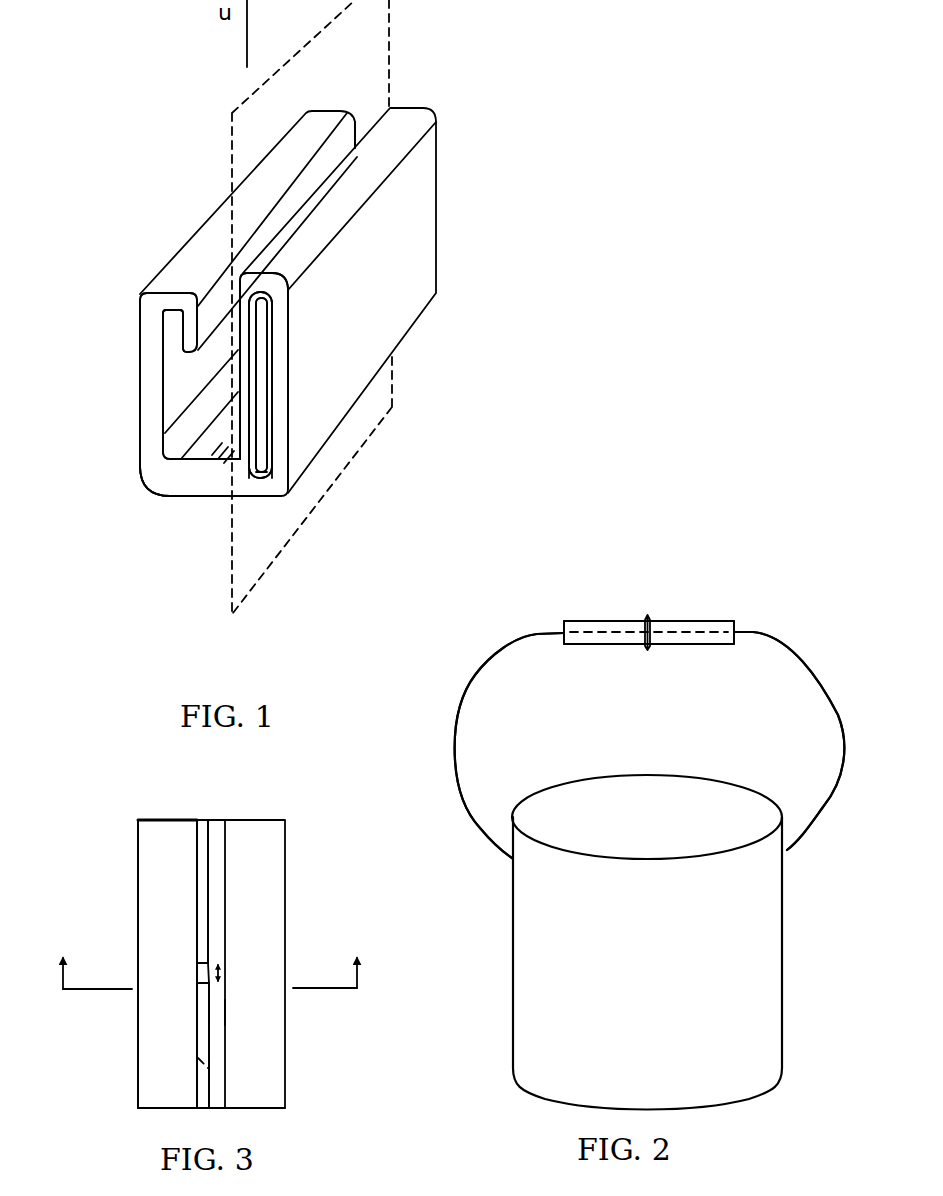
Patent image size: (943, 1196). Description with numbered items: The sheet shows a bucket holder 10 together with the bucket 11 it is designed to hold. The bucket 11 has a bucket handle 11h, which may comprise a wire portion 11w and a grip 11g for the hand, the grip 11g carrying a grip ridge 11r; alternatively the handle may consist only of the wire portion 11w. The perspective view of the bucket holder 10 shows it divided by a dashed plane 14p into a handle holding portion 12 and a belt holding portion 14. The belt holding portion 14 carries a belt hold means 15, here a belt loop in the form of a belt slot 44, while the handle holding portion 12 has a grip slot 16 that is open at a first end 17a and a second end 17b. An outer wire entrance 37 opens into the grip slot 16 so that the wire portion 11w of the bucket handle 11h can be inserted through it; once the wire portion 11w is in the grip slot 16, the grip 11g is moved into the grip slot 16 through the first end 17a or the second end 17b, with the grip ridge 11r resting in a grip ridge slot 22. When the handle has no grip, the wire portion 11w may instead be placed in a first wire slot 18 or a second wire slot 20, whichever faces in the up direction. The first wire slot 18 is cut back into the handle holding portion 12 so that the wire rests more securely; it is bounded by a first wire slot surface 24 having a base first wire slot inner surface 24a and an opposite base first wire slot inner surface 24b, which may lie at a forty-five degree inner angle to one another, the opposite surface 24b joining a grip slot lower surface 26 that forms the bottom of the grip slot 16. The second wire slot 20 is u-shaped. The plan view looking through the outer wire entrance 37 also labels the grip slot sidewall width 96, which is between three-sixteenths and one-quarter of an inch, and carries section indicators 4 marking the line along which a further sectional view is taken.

In FIG. 1, the bucket holder 10 is at (137, 98).
In FIG. 3, the bucket holder 10 is at (67, 790).
In FIG. 2, the bucket 11 is at (495, 913).
In FIG. 2, the bucket handle 11h is at (683, 723).
In FIG. 2, the wire portion 11w is at (470, 690).
In FIG. 2, the grip 11g is at (663, 657).
In FIG. 2, the grip ridge 11r is at (653, 620).
In FIG. 1, the handle holding portion 12 is at (178, 530).
In FIG. 1, the belt holding portion 14 is at (260, 530).
In FIG. 1, the dashed plane 14p is at (353, 38).
In FIG. 1, the belt hold means 15 is at (528, 212).
In FIG. 1, the grip slot 16 is at (183, 378).
In FIG. 1, the first end 17a is at (143, 455).
In FIG. 3, the first end 17a is at (163, 1108).
In FIG. 1, the second end 17b is at (345, 112).
In FIG. 3, the second end 17b is at (172, 820).
In FIG. 1, the first wire slot 18 is at (203, 483).
In FIG. 3, the first wire slot 18 is at (215, 850).
In FIG. 1, the second wire slot 20 is at (173, 327).
In FIG. 3, the grip ridge slot 22 is at (200, 972).
In FIG. 1, the first wire slot surface 24 is at (433, 408).
In FIG. 1, the base first wire slot inner surface 24a is at (212, 475).
In FIG. 3, the base first wire slot inner surface 24a is at (226, 997).
In FIG. 1, the opposite base first wire slot inner surface 24b is at (190, 481).
In FIG. 3, the opposite base first wire slot inner surface 24b is at (208, 1069).
In FIG. 1, the grip slot lower surface 26 is at (213, 444).
In FIG. 3, the grip slot lower surface 26 is at (200, 932).
In FIG. 1, the outer wire entrance 37 is at (362, 118).
In FIG. 1, the belt slot 44 is at (262, 338).
In FIG. 3, the grip slot sidewall width 96 is at (223, 975).
In FIG. 3, the section line 4- 4 is at (208, 961).